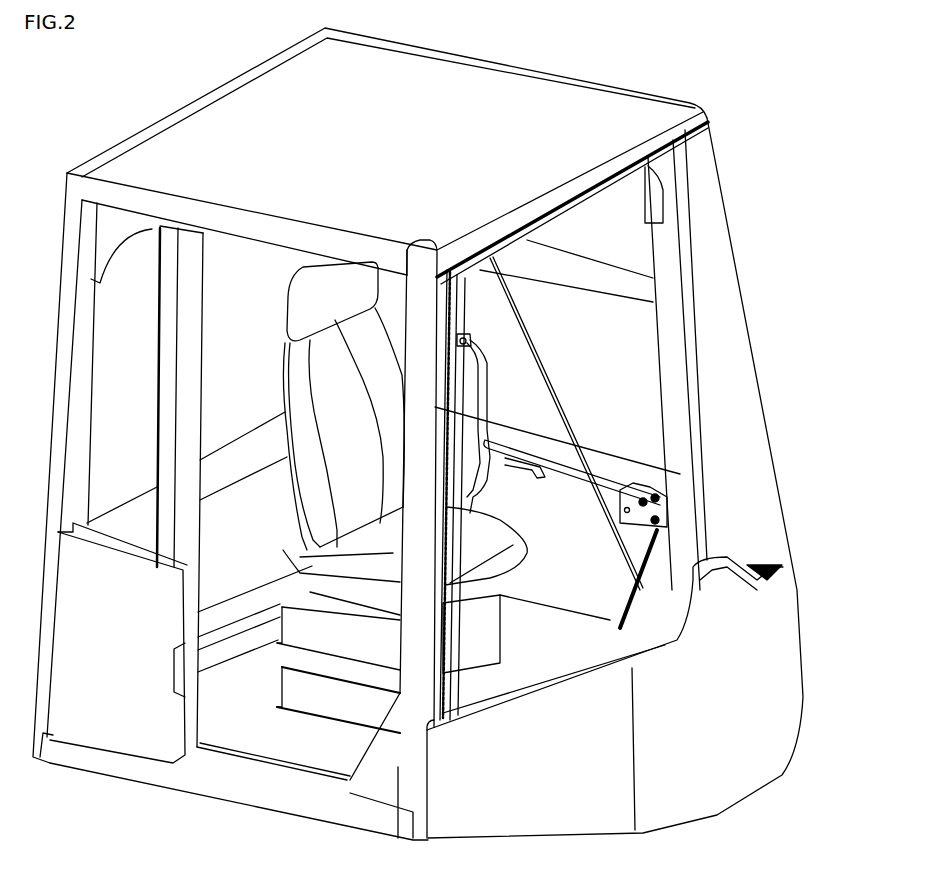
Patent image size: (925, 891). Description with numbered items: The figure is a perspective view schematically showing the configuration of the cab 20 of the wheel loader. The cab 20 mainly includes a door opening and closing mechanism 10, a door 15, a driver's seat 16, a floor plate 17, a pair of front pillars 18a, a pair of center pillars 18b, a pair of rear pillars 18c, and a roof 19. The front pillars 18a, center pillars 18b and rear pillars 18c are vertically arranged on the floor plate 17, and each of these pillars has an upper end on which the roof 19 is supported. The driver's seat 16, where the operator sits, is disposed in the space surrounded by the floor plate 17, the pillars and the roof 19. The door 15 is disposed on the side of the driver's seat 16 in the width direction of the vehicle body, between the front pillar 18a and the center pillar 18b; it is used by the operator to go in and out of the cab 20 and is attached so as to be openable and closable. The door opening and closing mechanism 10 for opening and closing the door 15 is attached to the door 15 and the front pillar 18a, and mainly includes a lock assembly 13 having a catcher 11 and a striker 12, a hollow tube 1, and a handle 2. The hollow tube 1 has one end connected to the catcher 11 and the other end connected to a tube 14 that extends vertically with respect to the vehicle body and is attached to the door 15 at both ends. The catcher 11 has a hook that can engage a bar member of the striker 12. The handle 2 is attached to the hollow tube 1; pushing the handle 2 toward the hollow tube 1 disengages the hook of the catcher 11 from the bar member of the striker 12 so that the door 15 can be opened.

The hollow tube 1 is at (518, 453).
The handle 2 is at (522, 470).
The door opening and closing mechanism 10 is at (561, 492).
The catcher 11 is at (655, 480).
The striker 12 is at (658, 512).
The lock assembly 13 is at (838, 433).
The tube 14 is at (487, 373).
The door 15 is at (613, 453).
The driver's seat 16 is at (640, 623).
The floor plate 17 is at (290, 740).
The front pillar 18a is at (665, 292).
The center pillar 18b is at (452, 423).
The rear pillar 18c is at (60, 450).
The roof 19 is at (443, 85).
The cab 20 is at (727, 108).